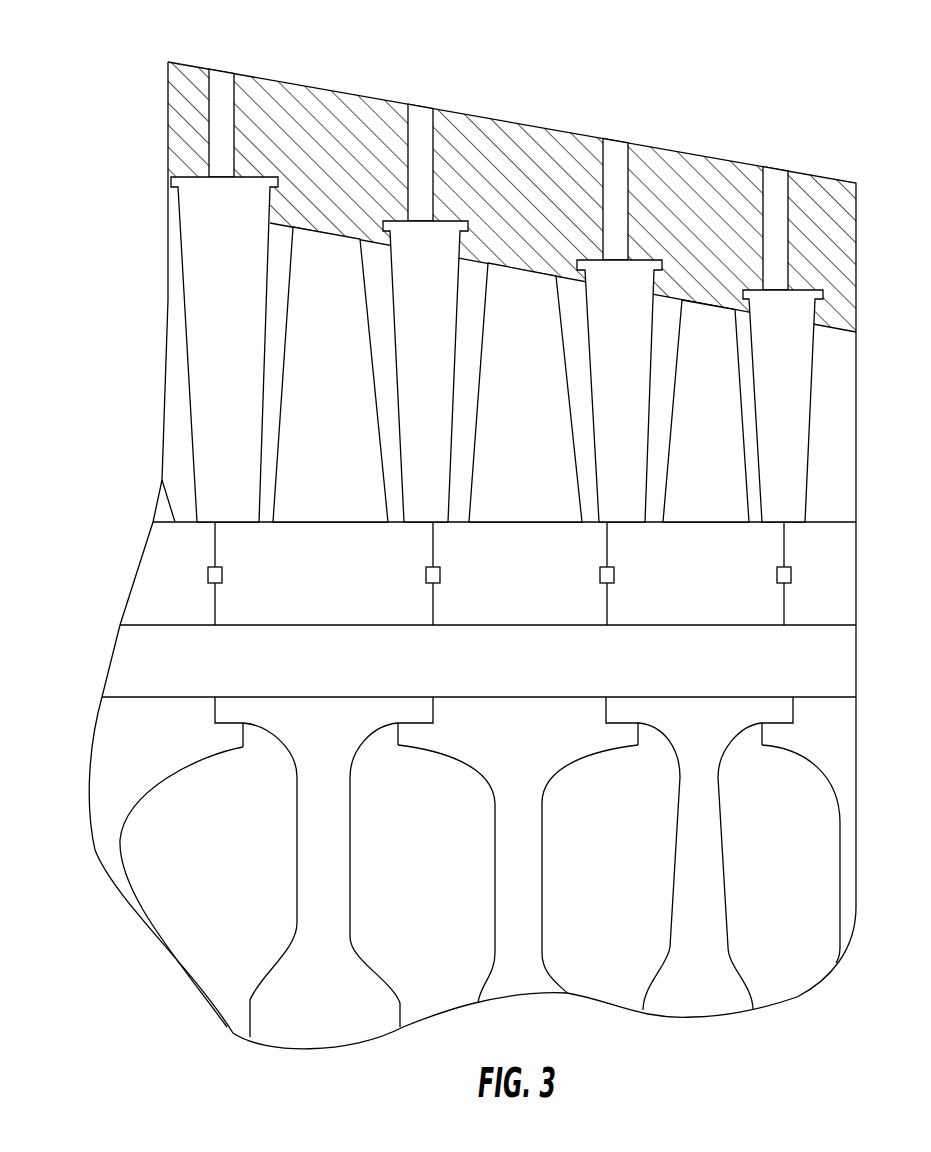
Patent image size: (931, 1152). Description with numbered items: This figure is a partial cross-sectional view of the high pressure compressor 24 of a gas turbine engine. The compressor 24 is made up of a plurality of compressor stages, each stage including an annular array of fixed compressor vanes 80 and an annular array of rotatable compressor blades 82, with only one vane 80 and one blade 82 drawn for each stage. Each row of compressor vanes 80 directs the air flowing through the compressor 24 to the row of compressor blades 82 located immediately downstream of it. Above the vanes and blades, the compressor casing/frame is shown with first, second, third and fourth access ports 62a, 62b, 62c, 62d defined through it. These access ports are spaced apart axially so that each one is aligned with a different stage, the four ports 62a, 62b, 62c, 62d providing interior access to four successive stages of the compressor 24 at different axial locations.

The high pressure compressor 24 is at (100, 86).
The first access port 62a is at (220, 58).
The second access port 62b is at (417, 98).
The third access port 62c is at (612, 132).
The fourth access port 62d is at (772, 151).
The compressor vane 80 is at (213, 351).
The compressor blade 82 is at (313, 371).